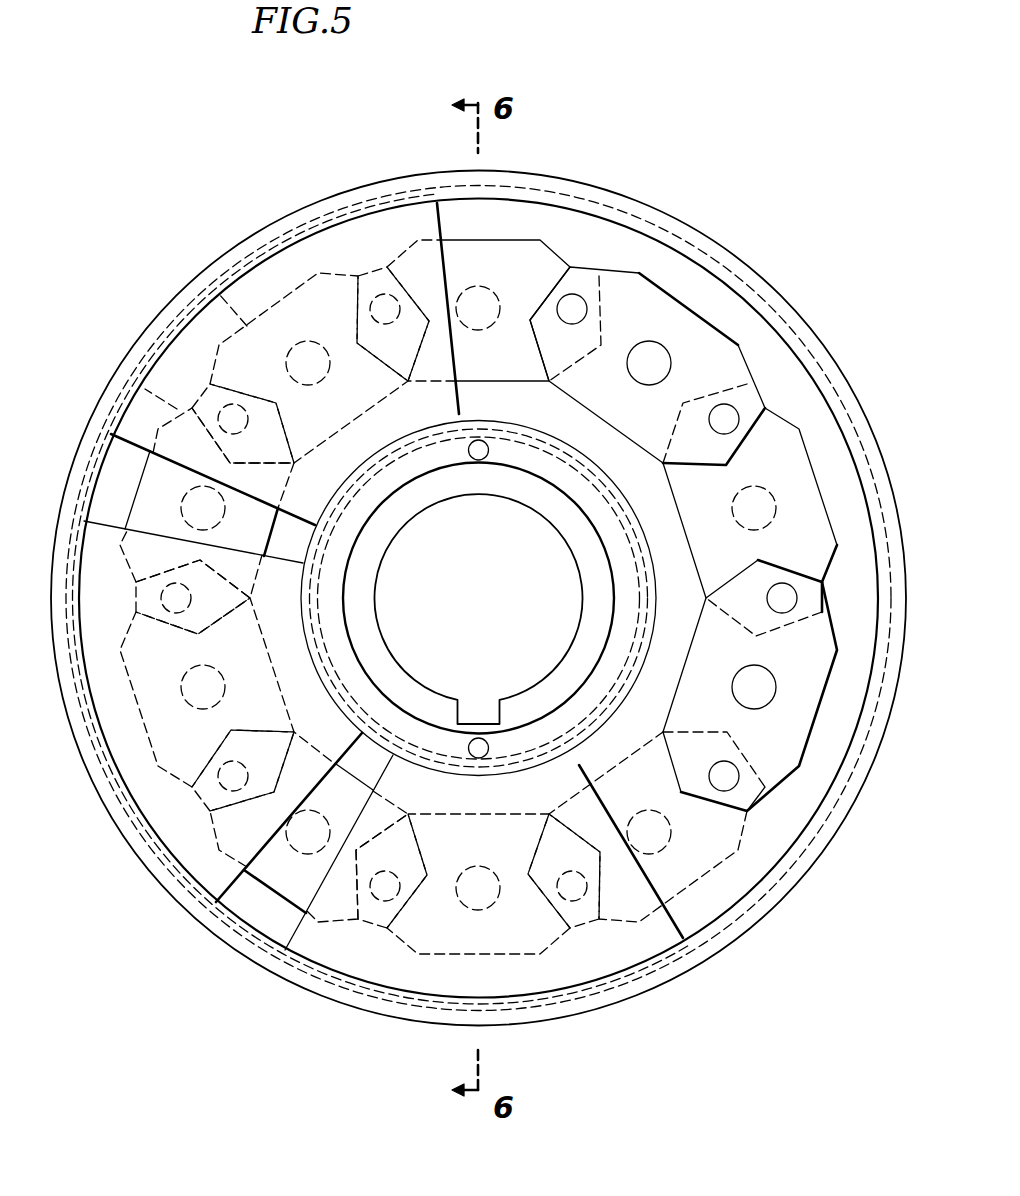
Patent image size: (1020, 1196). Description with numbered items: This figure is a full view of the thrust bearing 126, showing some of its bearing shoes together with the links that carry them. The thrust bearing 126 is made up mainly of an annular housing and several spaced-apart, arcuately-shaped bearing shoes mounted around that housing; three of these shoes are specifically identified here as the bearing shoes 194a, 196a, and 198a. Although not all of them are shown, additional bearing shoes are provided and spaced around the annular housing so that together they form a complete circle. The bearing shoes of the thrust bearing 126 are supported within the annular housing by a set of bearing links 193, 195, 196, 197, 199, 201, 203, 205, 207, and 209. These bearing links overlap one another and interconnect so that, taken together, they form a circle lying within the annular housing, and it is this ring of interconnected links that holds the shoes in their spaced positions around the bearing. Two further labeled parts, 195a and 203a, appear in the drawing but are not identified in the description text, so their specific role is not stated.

The thrust bearing 126 is at (745, 185).
The bearing link 193 is at (718, 322).
The bearing shoe 194a is at (292, 268).
The bearing link 195 is at (512, 238).
The spacer lamination 195a is at (380, 265).
The bearing link 196 is at (800, 437).
The bearing shoe 196a is at (178, 832).
The bearing link 197 is at (213, 297).
The bearing shoe 198a is at (338, 962).
The bearing link 199 is at (145, 389).
The bearing link 201 is at (130, 750).
The bearing link 203 is at (268, 900).
The spacer lamination 203a is at (362, 985).
The bearing link 205 is at (510, 960).
The bearing link 207 is at (703, 897).
The bearing link 209 is at (816, 757).